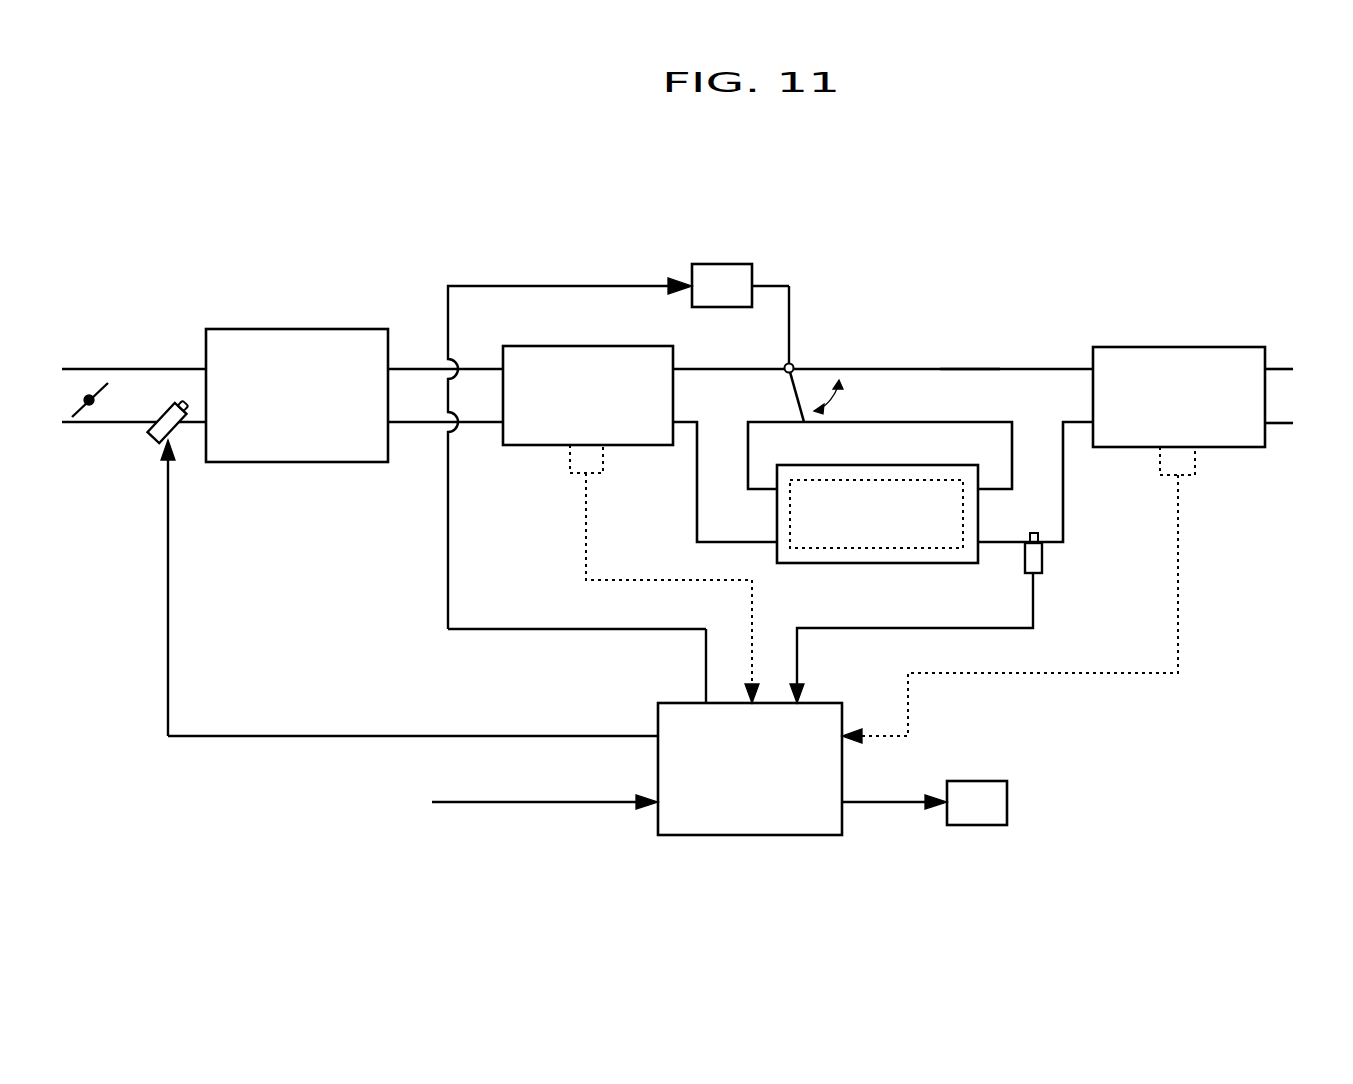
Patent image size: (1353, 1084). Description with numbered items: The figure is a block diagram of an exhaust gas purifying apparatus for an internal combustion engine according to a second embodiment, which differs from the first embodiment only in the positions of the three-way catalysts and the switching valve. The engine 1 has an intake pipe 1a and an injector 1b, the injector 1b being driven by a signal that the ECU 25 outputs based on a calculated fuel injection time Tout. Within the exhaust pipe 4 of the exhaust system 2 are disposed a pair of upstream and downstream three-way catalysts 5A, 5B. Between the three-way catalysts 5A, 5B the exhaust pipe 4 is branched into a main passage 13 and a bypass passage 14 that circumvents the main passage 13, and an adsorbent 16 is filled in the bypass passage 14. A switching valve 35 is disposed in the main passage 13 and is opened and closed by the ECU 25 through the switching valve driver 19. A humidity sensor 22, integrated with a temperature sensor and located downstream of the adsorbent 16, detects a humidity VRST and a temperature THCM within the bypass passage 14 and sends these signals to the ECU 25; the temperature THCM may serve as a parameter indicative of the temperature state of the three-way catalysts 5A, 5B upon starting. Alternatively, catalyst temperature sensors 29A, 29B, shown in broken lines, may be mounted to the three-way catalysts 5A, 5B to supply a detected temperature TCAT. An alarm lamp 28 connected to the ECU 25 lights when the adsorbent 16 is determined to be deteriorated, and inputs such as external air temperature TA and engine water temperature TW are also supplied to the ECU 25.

The engine 1 is at (330, 329).
The intake pipe 1a is at (137, 368).
The injector 1b is at (147, 437).
The exhaust system 2 is at (994, 336).
The exhaust pipe 4 is at (1045, 367).
The upstream three-way catalyst 5A is at (628, 446).
The downstream three-way catalyst 5B is at (1170, 347).
The main passage 13 is at (910, 392).
The bypass passage 14 is at (1053, 470).
The adsorbent 16 is at (818, 564).
The switching valve driver 19 is at (715, 264).
The humidity sensor 22 is at (1043, 561).
The ECU 25 is at (780, 836).
The alarm lamp 28 is at (968, 826).
The catalyst temperature sensor 29A is at (568, 455).
The catalyst temperature sensor 29B is at (1198, 462).
The switching valve 35 is at (800, 395).